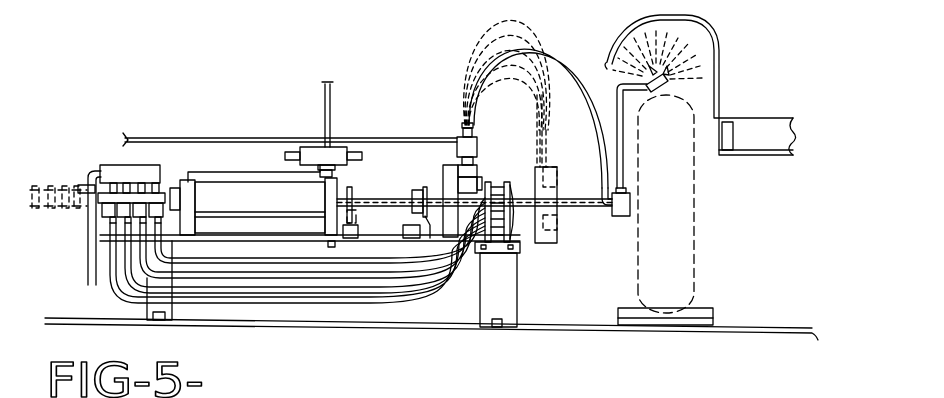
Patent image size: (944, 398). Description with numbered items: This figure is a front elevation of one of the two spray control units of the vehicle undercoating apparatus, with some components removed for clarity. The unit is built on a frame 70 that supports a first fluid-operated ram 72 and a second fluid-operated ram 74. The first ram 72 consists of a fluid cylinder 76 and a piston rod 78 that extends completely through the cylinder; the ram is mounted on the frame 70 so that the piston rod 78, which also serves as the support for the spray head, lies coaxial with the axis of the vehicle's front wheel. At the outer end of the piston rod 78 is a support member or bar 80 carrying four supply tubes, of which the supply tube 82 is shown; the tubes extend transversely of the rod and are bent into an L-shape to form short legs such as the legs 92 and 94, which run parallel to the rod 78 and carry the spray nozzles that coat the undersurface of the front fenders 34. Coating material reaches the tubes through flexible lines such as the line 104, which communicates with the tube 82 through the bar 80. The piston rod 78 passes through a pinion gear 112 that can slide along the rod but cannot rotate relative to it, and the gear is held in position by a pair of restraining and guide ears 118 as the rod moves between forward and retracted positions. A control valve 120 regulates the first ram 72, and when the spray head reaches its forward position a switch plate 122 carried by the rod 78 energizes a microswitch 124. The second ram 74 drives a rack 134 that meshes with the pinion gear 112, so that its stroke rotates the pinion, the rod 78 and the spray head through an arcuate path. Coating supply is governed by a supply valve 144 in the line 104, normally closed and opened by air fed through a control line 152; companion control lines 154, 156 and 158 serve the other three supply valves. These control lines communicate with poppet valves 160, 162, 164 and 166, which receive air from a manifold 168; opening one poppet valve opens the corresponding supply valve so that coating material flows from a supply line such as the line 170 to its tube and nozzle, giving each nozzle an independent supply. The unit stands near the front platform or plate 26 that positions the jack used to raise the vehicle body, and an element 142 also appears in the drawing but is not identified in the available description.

The front platform or plate 26 is at (599, 322).
The front fenders 34 is at (617, 33).
The frame 70 is at (519, 291).
The first fluid-operated ram 72 is at (241, 163).
The second fluid-operated ram 74 is at (551, 232).
The fluid cylinder 76 is at (285, 211).
The piston rod 78 is at (88, 176).
The support member or bar 80 is at (621, 216).
The supply tube 82 is at (624, 170).
The short leg 92 is at (330, 390).
The short leg 94 is at (365, 382).
The flexible line 104 is at (601, 128).
The pinion gear 112 is at (513, 186).
The restraining and guide ears 118 is at (521, 180).
The control valve 120 is at (315, 145).
The switch plate 122 is at (438, 187).
The microswitch 124 is at (427, 242).
The rack 134 is at (514, 219).
The switch 142 is at (349, 240).
The supply valve 144 is at (455, 154).
The control line 152 is at (238, 266).
The control line 154 is at (293, 258).
The control line 156 is at (240, 302).
The control line 158 is at (337, 303).
The poppet valve 160 is at (104, 212).
The poppet valve 162 is at (124, 222).
The poppet valve 164 is at (140, 224).
The poppet valve 166 is at (168, 212).
The manifold 168 is at (100, 168).
The supply line 170 is at (395, 142).